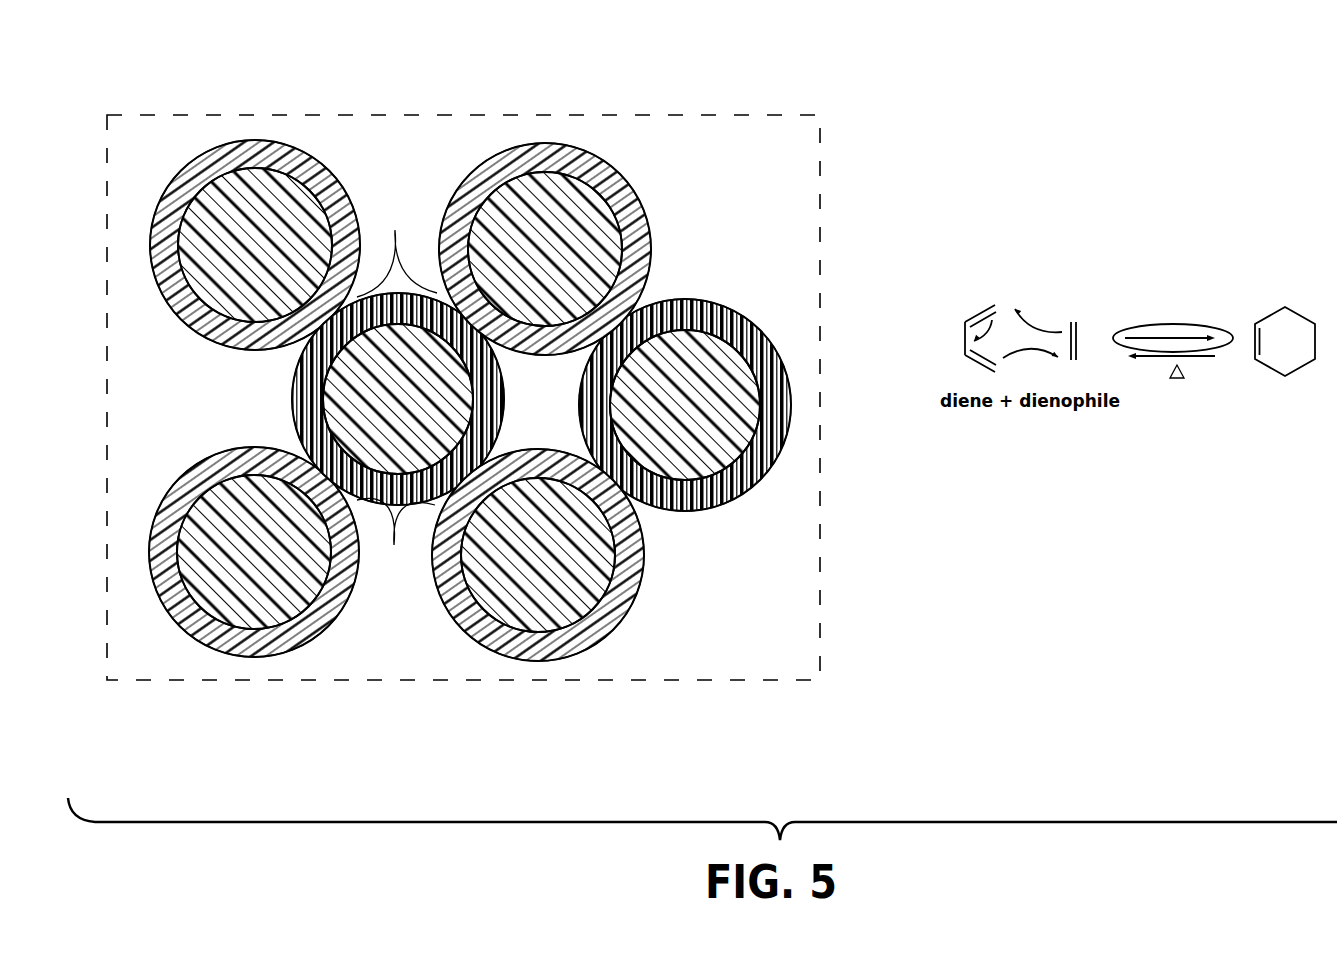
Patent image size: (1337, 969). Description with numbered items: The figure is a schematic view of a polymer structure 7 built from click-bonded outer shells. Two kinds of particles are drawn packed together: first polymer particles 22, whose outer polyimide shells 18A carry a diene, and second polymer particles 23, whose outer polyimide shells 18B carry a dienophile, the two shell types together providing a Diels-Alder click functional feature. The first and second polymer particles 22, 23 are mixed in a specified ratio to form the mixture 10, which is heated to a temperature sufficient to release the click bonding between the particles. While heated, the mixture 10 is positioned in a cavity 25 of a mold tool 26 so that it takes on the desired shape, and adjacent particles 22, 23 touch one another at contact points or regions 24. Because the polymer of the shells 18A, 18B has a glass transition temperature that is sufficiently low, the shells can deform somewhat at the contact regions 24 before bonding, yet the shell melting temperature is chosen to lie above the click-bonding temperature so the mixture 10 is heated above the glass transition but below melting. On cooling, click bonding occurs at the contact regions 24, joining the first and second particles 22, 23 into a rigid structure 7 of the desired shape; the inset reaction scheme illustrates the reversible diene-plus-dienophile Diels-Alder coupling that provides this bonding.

The structure 7 is at (425, 647).
The mixture 10 is at (396, 118).
The polyimide shell having a diene 18A is at (263, 168).
The polyimide shell having a dienophile 18B is at (310, 420).
The first polymer particles 22 is at (183, 157).
The second polymer particles 23 is at (290, 380).
The contact regions 24 is at (395, 230).
The cavity 25 is at (778, 628).
The mold tool 26 is at (826, 586).